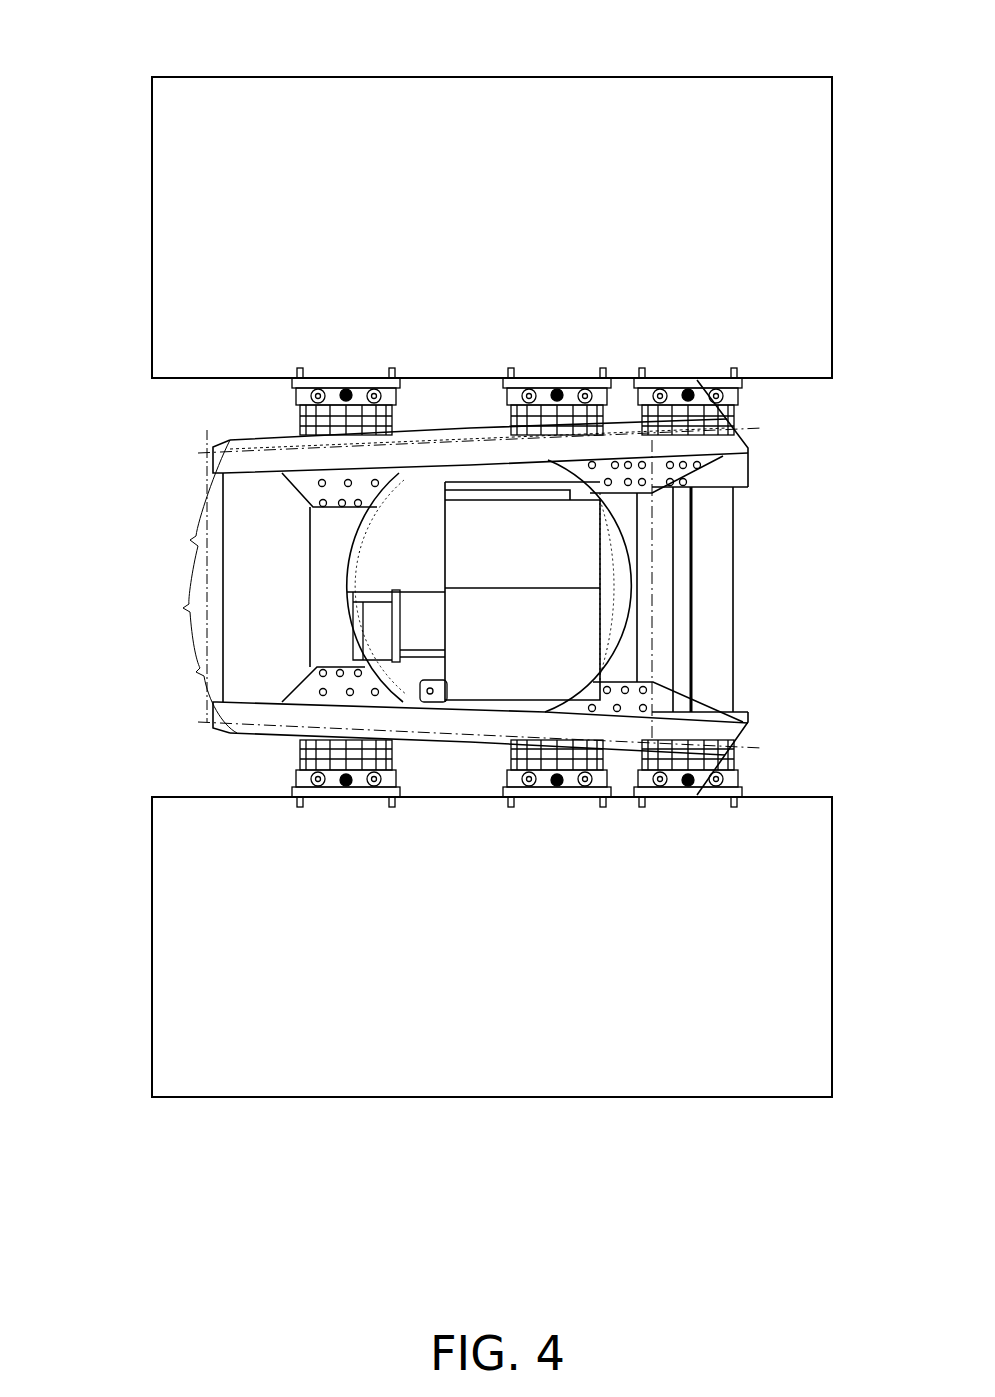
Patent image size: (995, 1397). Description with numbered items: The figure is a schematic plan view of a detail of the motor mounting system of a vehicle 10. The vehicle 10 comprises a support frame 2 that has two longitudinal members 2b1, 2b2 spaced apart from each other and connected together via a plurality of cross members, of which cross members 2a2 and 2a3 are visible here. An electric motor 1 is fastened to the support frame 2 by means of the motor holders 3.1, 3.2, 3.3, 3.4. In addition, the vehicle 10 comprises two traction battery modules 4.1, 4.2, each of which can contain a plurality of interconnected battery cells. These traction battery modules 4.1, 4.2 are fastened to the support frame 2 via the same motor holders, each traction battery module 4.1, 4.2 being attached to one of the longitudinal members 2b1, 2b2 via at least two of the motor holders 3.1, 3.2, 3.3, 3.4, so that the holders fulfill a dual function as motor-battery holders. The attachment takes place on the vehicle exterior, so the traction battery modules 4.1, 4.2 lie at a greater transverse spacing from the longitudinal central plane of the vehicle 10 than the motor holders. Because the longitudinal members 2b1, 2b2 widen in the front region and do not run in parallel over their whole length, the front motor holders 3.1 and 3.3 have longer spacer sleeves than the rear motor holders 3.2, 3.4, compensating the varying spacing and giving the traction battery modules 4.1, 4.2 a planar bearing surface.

The electric motor 1 is at (488, 655).
The support frame 2 is at (804, 604).
The cross member 2a2 is at (320, 580).
The cross member 2a3 is at (625, 667).
The longitudinal member 2b1 is at (723, 742).
The longitudinal member 2b2 is at (718, 433).
The motor holder 3.1 is at (250, 770).
The motor holder 3.2 is at (560, 850).
The motor holder 3.3 is at (240, 400).
The motor holder 3.4 is at (560, 345).
The traction battery module 4.1 is at (762, 1074).
The traction battery module 4.2 is at (238, 108).
The vehicle 10 is at (90, 593).